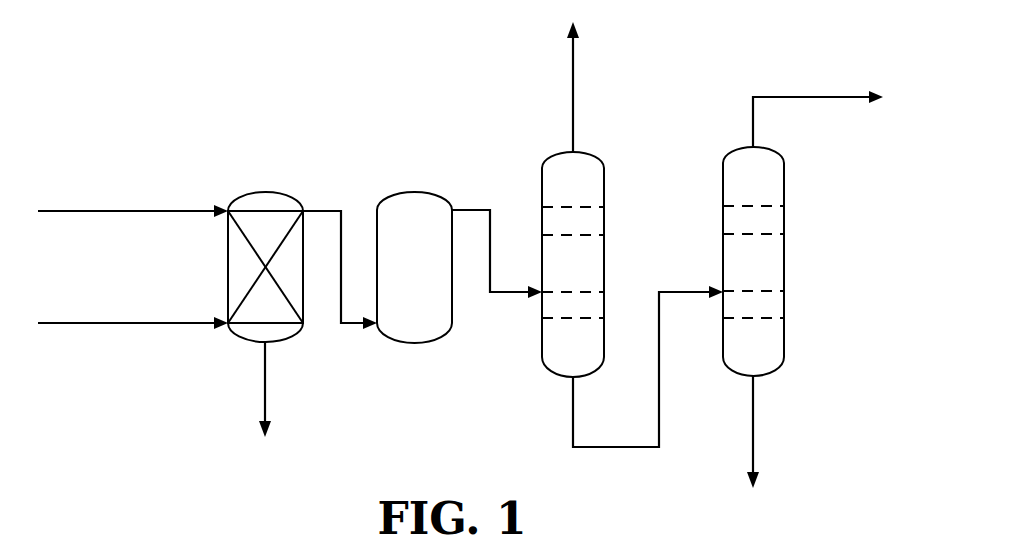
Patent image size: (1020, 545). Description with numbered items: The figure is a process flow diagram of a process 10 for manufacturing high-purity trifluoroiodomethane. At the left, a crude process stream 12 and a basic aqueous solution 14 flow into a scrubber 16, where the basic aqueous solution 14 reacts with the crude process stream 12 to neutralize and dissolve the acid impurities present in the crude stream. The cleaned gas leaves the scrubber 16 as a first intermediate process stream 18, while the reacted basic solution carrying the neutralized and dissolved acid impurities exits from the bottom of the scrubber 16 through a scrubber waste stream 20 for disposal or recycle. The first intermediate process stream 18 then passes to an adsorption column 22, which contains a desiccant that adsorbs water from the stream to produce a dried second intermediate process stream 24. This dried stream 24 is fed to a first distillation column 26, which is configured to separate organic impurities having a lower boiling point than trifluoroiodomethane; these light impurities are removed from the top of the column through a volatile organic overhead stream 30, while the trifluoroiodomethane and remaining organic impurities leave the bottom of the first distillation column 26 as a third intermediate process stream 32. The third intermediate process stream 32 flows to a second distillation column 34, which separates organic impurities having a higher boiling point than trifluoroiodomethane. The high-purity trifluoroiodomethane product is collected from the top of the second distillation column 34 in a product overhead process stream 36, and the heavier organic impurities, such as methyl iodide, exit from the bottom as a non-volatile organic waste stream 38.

The process 10 is at (172, 102).
The crude process stream 12 is at (142, 323).
The basic aqueous solution 14 is at (108, 211).
The scrubber 16 is at (258, 194).
The first intermediate process stream 18 is at (320, 210).
The scrubber waste stream 20 is at (262, 402).
The adsorption column 22 is at (396, 195).
The second intermediate process stream 24 is at (474, 210).
The first distillation column 26 is at (594, 155).
The volatile organic overhead stream 30 is at (572, 106).
The third intermediate process stream 32 is at (570, 430).
The second distillation column 34 is at (785, 164).
The product overhead process stream 36 is at (780, 97).
The non-volatile organic waste stream 38 is at (755, 412).